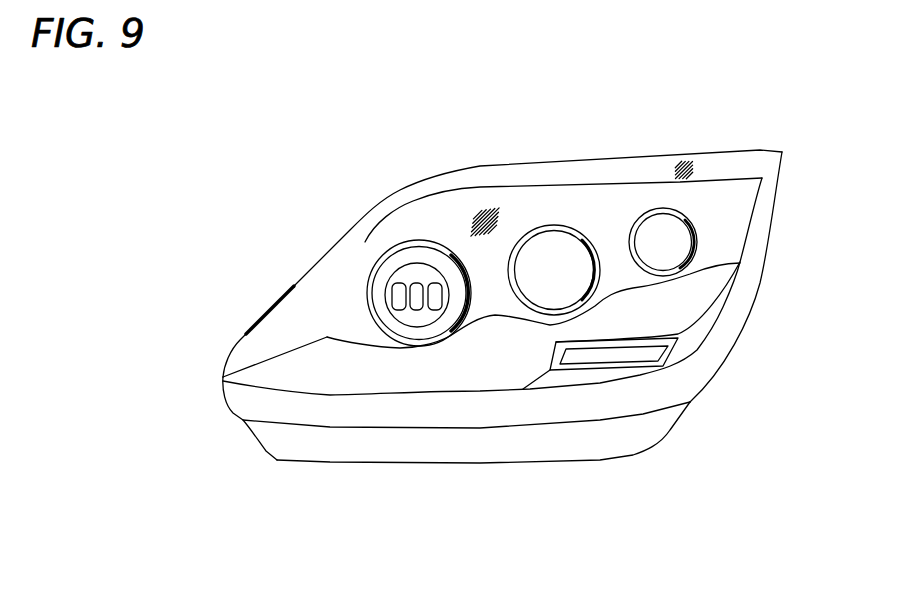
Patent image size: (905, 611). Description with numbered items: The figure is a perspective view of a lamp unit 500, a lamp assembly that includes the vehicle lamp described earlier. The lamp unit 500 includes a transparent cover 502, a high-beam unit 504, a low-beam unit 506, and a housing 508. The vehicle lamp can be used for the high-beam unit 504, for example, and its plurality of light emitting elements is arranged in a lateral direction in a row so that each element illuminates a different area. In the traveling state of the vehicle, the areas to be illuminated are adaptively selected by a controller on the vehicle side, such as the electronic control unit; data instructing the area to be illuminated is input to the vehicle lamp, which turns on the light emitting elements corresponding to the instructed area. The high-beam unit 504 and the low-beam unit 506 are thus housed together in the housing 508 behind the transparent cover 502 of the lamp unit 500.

The lamp unit 500 is at (517, 336).
The transparent cover 502 is at (310, 308).
The high-beam unit 504 is at (420, 257).
The low-beam unit 506 is at (662, 233).
The housing 508 is at (740, 297).